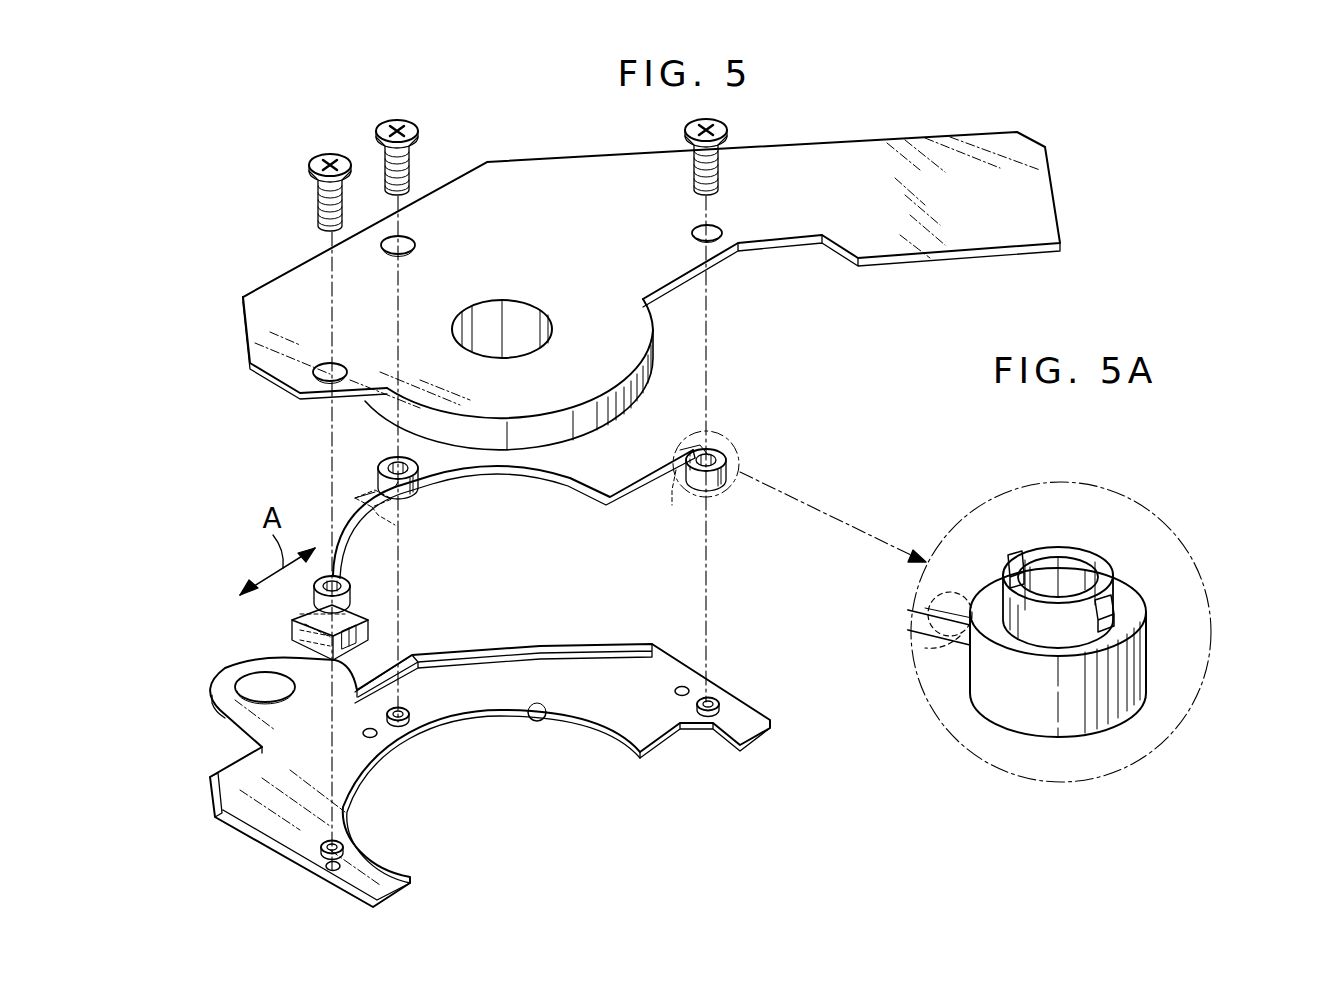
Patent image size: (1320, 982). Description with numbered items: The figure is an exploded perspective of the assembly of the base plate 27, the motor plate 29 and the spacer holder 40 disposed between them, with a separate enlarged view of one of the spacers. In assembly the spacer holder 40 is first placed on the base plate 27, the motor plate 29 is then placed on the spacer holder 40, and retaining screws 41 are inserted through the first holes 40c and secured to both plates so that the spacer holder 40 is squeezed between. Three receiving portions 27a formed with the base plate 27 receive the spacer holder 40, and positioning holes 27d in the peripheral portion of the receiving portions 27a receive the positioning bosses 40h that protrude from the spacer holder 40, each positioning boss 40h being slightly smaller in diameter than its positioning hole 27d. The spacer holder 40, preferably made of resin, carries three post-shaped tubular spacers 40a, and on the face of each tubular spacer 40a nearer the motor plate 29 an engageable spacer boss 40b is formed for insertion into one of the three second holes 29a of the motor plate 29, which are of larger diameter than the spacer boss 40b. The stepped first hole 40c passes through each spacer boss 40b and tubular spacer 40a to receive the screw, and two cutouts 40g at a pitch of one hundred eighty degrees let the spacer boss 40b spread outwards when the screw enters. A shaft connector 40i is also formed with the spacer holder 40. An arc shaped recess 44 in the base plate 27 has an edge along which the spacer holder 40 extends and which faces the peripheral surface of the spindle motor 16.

In FIG. 5, the spindle motor 16 is at (632, 402).
In FIG. 5, the base plate 27 is at (740, 712).
In FIG. 5, the receiving portions 27a is at (410, 713).
In FIG. 5, the positioning holes 27d is at (682, 687).
In FIG. 5, the motor plate 29 is at (258, 324).
In FIG. 5, the second holes 29a is at (414, 242).
In FIG. 5, the spacer holder 40 is at (495, 488).
In FIG. 5, the tubular spacers 40a is at (380, 476).
In FIG. 5A, the tubular spacers 40a is at (1082, 723).
In FIG. 5A, the spacer boss 40b is at (1068, 550).
In FIG. 5A, the first hole 40c is at (1090, 580).
In FIG. 5A, the cutouts 40g is at (1015, 556).
In FIG. 5, the positioning boss 40h is at (380, 512).
In FIG. 5A, the positioning boss 40h is at (945, 635).
In FIG. 5, the shaft connector 40i is at (368, 630).
In FIG. 5, the retaining screws 41 is at (420, 150).
In FIG. 5, the arc shaped recess 44 is at (537, 711).